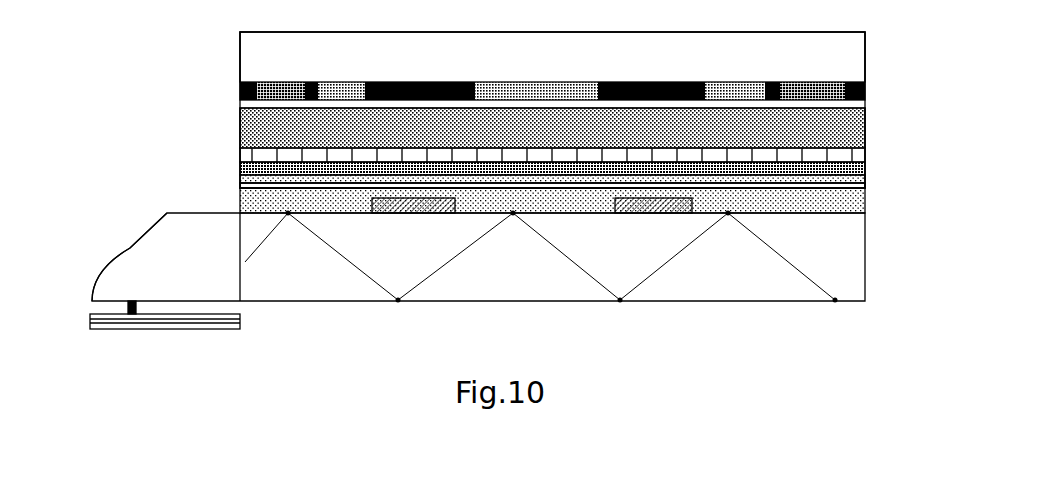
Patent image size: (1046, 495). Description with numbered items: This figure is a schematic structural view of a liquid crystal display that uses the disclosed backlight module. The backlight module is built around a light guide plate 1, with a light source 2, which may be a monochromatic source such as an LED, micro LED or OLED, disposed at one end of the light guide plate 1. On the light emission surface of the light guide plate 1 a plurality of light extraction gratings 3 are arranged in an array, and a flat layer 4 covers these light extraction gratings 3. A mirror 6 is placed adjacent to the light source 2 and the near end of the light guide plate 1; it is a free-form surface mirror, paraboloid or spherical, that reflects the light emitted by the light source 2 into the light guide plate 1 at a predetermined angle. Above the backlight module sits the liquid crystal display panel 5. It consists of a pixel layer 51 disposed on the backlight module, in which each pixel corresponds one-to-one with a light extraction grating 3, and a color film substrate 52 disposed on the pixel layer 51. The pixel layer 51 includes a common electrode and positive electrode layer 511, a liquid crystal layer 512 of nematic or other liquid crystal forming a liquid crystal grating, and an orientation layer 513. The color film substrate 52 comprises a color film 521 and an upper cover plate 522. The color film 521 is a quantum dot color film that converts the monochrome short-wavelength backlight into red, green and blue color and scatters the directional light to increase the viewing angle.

The light guide plate 1 is at (866, 268).
The light source 2 is at (165, 333).
The light extraction gratings 3 is at (632, 213).
The flat layer 4 is at (542, 203).
The liquid crystal display panel 5 is at (170, 70).
The mirror 6 is at (128, 248).
The pixel layer 51 is at (240, 108).
The color film substrate 52 is at (240, 33).
The common electrode and positive electrode layer 511 is at (866, 162).
The liquid crystal layer 512 is at (866, 128).
The orientation layer 513 is at (866, 108).
The color film 521 is at (827, 82).
The upper cover plate 522 is at (866, 58).